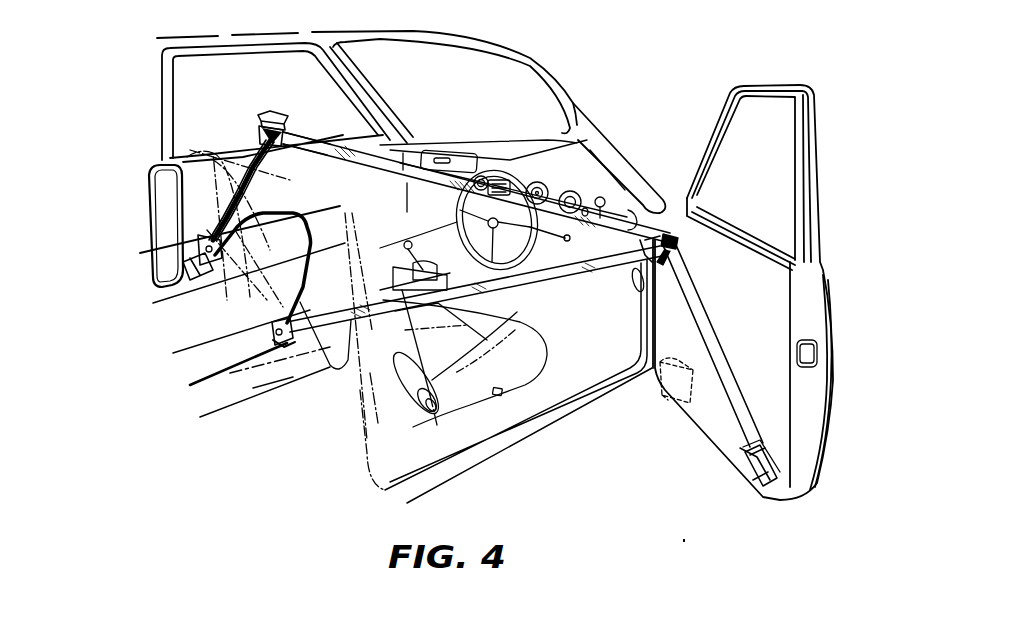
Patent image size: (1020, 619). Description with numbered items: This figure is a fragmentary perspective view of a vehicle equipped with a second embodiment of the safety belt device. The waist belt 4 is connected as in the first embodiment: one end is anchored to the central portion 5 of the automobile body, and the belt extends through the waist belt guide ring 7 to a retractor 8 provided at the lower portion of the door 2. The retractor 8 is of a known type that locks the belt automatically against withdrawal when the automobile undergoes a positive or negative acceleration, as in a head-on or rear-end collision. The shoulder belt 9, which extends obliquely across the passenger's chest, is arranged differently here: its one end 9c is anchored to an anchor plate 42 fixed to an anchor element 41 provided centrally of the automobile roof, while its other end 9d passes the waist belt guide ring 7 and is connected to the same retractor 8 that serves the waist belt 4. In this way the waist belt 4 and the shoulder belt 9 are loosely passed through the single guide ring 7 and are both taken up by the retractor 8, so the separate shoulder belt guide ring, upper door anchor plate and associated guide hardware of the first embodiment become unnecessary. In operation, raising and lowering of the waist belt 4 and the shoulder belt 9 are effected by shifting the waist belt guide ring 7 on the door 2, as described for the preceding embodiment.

The door 2 is at (700, 413).
The waist belt 4 is at (263, 207).
The central portion of the automobile body 5 is at (237, 347).
The guide ring 7 is at (150, 252).
The retractor 8 is at (757, 484).
The shoulder belt 9 is at (240, 172).
The end of the shoulder belt 9c is at (293, 136).
The other end of the shoulder belt 9d is at (207, 235).
The anchor element 41 is at (263, 112).
The anchor plate 42 is at (290, 125).